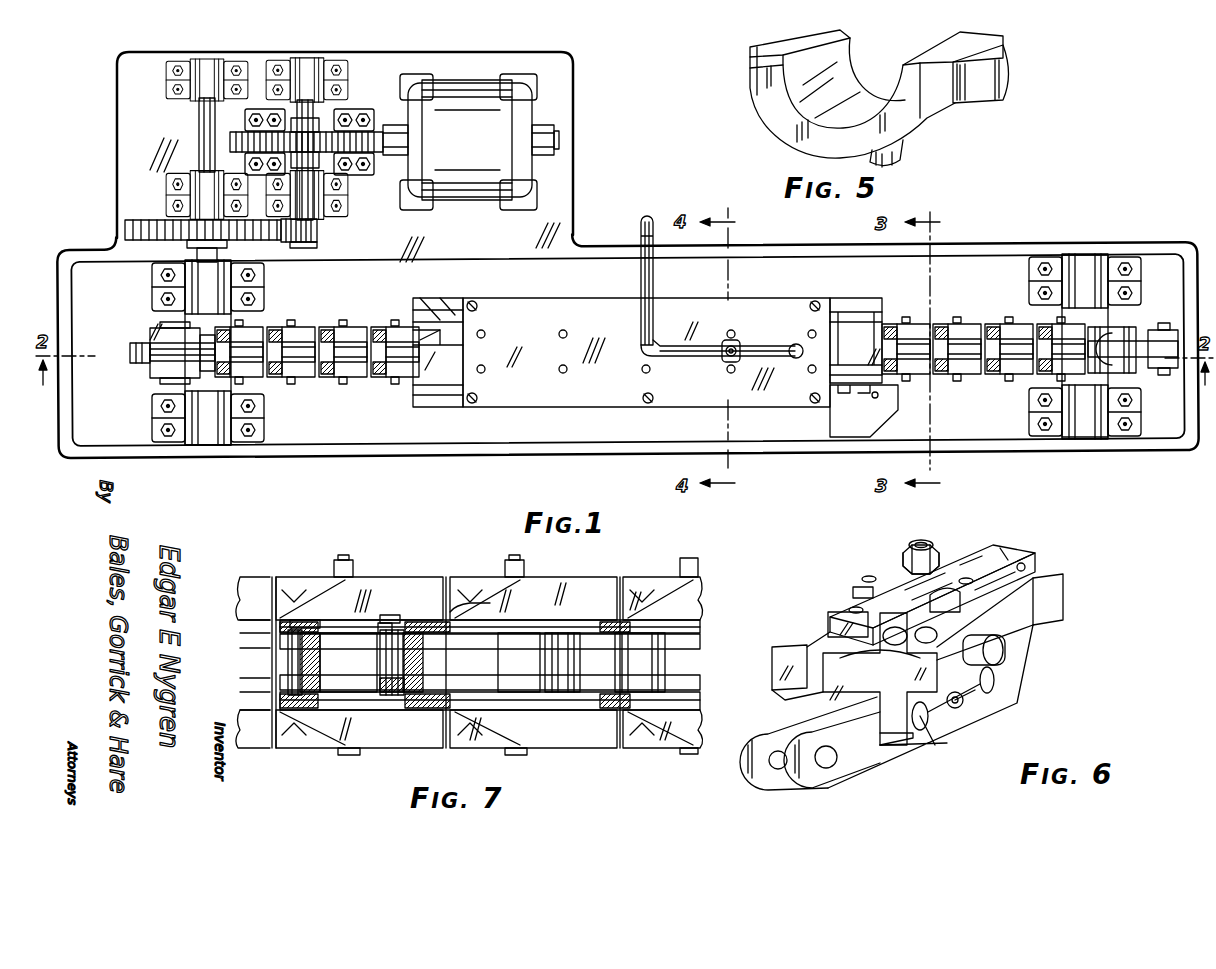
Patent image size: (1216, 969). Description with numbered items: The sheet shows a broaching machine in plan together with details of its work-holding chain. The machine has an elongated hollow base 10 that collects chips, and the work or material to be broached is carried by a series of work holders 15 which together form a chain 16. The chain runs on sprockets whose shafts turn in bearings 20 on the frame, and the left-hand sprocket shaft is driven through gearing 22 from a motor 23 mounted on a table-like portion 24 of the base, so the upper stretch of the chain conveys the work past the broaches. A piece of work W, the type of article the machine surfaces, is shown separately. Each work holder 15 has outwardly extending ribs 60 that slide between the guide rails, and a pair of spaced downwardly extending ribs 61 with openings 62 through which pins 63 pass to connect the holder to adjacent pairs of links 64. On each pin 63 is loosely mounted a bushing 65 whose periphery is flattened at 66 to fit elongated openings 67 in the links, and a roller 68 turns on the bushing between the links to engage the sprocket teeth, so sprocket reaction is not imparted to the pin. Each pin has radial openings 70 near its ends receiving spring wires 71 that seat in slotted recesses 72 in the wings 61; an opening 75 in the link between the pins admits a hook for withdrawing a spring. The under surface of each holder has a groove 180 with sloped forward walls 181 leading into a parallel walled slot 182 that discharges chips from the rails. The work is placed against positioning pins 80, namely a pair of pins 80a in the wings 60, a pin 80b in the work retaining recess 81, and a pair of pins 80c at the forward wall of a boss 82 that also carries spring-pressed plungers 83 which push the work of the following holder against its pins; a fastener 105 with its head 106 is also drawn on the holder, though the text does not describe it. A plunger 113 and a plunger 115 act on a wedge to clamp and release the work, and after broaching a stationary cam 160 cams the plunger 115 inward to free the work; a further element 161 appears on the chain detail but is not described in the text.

In FIG. 1, the base 10 is at (360, 452).
In FIG. 1, the work holder 15 is at (135, 370).
In FIG. 6, the work holder 15 is at (1055, 590).
In FIG. 1, the chain 16 is at (985, 378).
In FIG. 7, the chain 16 is at (690, 625).
In FIG. 1, the bearing 20 is at (225, 290).
In FIG. 1, the gearing 22 is at (320, 233).
In FIG. 1, the motor 23 is at (500, 118).
In FIG. 1, the table-like portion 24 is at (558, 192).
In FIG. 6, the rib 60 is at (773, 657).
In FIG. 6, the rib 61 is at (1010, 688).
In FIG. 6, the opening 62 is at (995, 683).
In FIG. 7, the pin 63 is at (398, 622).
In FIG. 6, the pin 63 is at (928, 735).
In FIG. 7, the link 64 is at (575, 633).
In FIG. 6, the link 64 is at (865, 750).
In FIG. 7, the bushing 65 is at (290, 665).
In FIG. 7, the flattened portion 66 is at (395, 692).
In FIG. 6, the elongated opening 67 is at (838, 787).
In FIG. 7, the roller 68 is at (330, 660).
In FIG. 7, the radial opening 70 is at (387, 625).
In FIG. 7, the spring member 71 is at (305, 625).
In FIG. 6, the slotted recess 72 is at (985, 695).
In FIG. 6, the opening 75 is at (962, 705).
In FIG. 6, the positioning pin 80 is at (960, 650).
In FIG. 6, the positioning pin 80a is at (828, 618).
In FIG. 6, the positioning pin 80b is at (897, 625).
In FIG. 6, the positioning pin 80c is at (857, 597).
In FIG. 6, the work retaining recess 81 is at (795, 695).
In FIG. 6, the boss 82 is at (1035, 550).
In FIG. 6, the plunger 83 is at (1028, 566).
In FIG. 6, the nut 105 is at (905, 554).
In FIG. 6, the bolt 106 is at (935, 540).
In FIG. 7, the plunger 113 is at (343, 557).
In FIG. 6, the plunger 113 is at (1000, 650).
In FIG. 7, the plunger 115 is at (350, 755).
In FIG. 1, the stationary cam 160 is at (435, 318).
In FIG. 7, the slot 161 is at (488, 600).
In FIG. 7, the groove 180 is at (283, 605).
In FIG. 7, the forward wall 181 is at (325, 750).
In FIG. 7, the parallel walled slot 182 is at (330, 752).
In FIG. 1, the work W is at (343, 380).